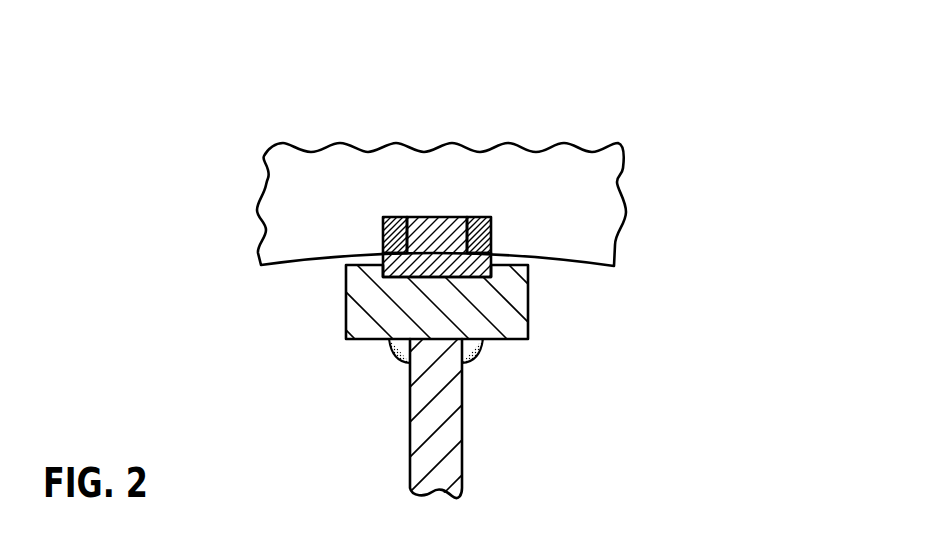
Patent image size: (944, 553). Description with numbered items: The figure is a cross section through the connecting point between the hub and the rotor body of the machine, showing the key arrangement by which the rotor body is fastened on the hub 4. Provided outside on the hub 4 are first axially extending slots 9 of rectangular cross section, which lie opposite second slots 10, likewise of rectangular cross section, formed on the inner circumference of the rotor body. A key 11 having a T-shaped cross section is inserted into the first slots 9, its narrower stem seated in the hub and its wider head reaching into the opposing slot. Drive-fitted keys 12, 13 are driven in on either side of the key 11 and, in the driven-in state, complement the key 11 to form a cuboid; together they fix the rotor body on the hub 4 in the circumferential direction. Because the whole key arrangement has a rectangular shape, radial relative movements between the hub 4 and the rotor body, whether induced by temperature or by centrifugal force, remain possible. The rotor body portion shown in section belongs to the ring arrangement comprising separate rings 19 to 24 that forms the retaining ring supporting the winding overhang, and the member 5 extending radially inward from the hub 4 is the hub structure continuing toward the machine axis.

The hub 4 is at (438, 302).
The shaft 5 is at (443, 429).
The first axially extending slots 9 is at (528, 304).
The second slots 10 is at (453, 215).
The key 11 is at (437, 255).
The drive-fitted key 12 is at (396, 230).
The drive-fitted key 13 is at (476, 230).
The ring 19 is at (537, 151).
The ring 24 is at (537, 151).